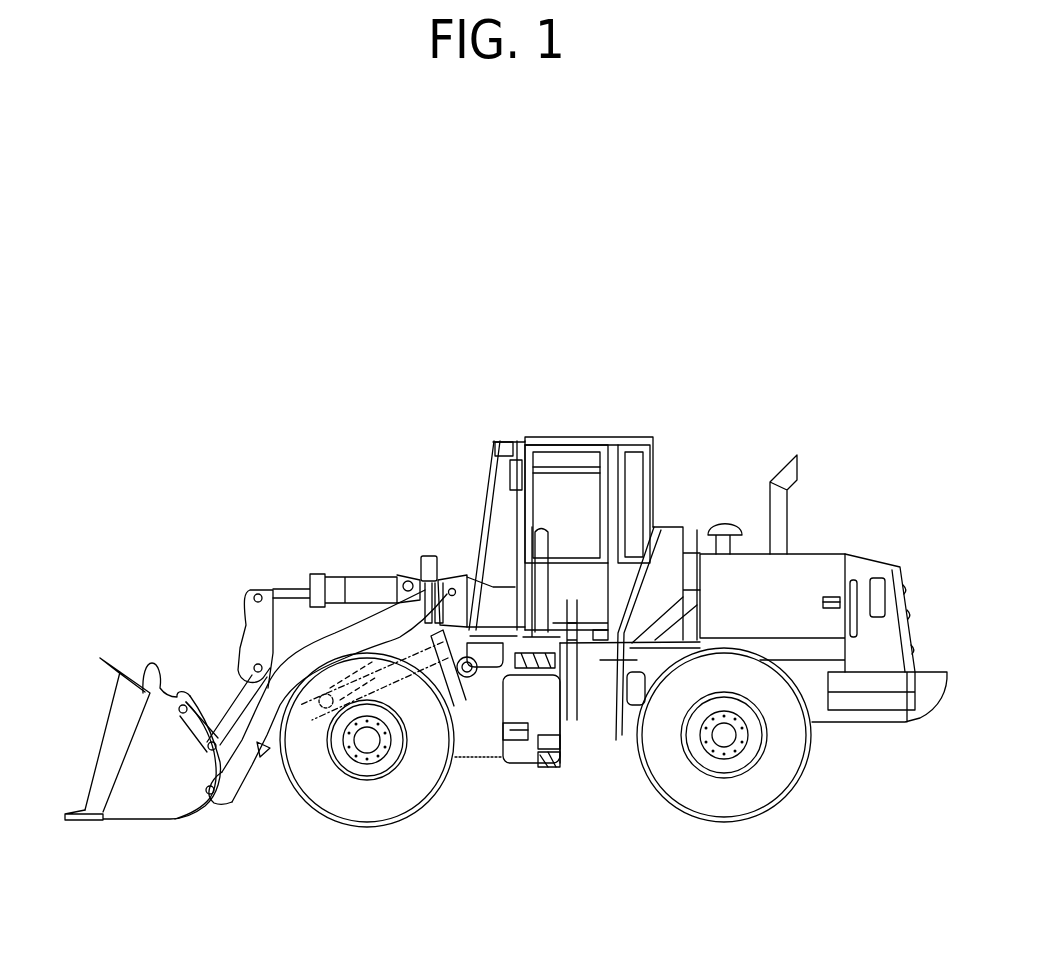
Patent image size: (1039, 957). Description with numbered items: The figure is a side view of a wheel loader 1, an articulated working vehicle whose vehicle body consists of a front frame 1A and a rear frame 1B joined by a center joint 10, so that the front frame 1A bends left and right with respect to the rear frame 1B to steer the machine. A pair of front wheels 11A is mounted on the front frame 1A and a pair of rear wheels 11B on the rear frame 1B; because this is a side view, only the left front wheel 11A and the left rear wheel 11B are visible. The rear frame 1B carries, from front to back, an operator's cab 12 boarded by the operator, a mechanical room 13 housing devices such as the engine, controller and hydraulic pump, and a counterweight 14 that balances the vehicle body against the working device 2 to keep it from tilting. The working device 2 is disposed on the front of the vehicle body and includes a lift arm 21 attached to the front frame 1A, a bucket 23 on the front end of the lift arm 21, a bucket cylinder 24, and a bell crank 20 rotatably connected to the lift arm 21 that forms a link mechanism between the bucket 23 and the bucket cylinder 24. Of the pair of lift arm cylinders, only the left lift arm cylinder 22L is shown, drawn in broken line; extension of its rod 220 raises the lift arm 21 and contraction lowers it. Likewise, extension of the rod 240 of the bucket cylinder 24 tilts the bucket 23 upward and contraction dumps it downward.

The wheel loader 1 is at (204, 429).
The front frame 1A is at (345, 477).
The rear frame 1B is at (736, 426).
The working device 2 is at (234, 845).
The center joint 10 is at (535, 790).
The front wheels 11A is at (397, 807).
The rear wheels 11B is at (720, 810).
The operator's cab 12 is at (502, 458).
The mechanical room 13 is at (823, 565).
The counterweight 14 is at (923, 683).
The bell crank 20 is at (247, 640).
The lift arm 21 is at (262, 742).
The lift arm cylinder 22L is at (403, 690).
The rod 220 is at (335, 692).
The bucket 23 is at (135, 802).
The bucket cylinder 24 is at (340, 585).
The rod 240 is at (282, 590).